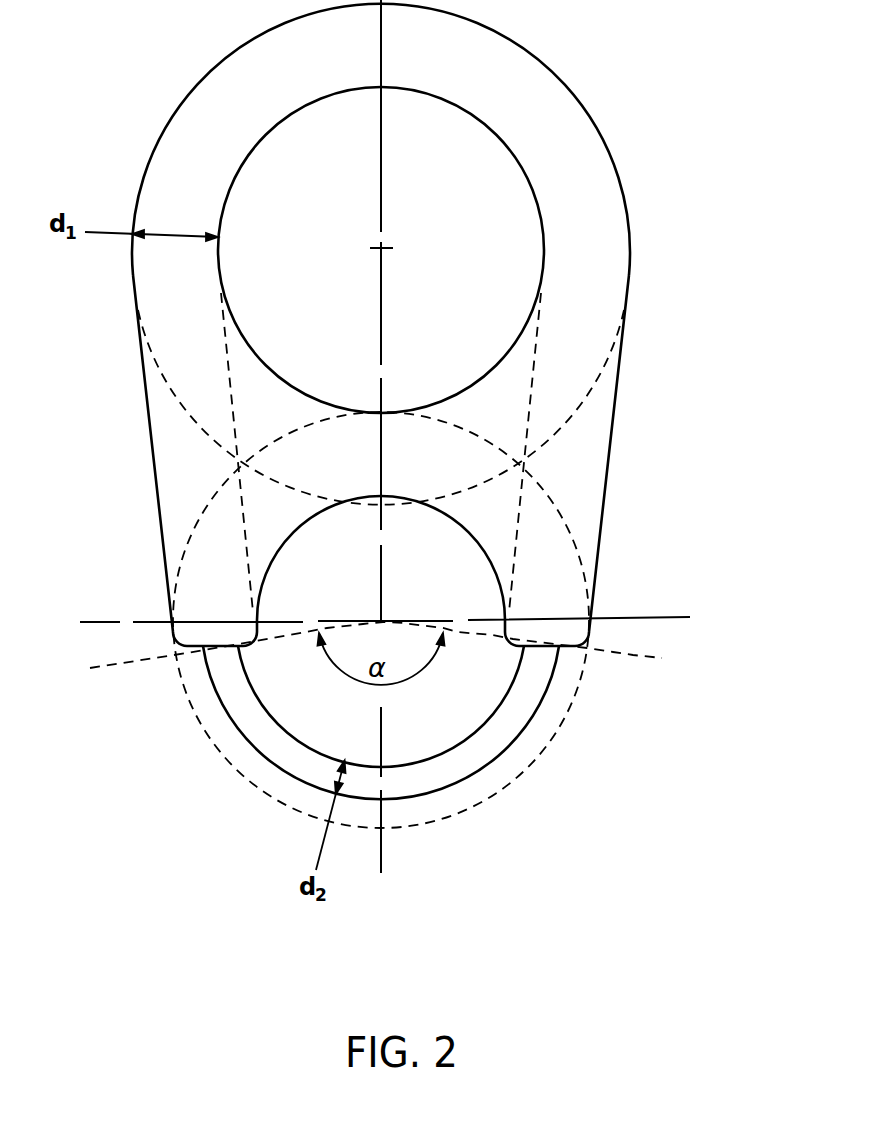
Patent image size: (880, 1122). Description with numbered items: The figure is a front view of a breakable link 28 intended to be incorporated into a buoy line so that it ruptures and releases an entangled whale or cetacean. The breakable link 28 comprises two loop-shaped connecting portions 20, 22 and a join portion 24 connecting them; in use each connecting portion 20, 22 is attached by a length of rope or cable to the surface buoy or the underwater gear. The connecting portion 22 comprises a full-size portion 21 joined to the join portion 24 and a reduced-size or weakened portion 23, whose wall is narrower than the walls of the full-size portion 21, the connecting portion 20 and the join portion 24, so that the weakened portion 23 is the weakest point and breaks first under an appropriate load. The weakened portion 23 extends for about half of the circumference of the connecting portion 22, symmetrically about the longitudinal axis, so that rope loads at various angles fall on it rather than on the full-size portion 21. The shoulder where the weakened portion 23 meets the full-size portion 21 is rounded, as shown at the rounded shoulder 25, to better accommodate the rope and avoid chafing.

The connecting portion 20 is at (517, 243).
The full-size portion 21 is at (208, 584).
The connecting portion 22 is at (457, 572).
The weakened portion 23 is at (235, 688).
The join portion 24 is at (663, 385).
The rounded shoulder 25 is at (590, 632).
The breakable link 28 is at (708, 135).